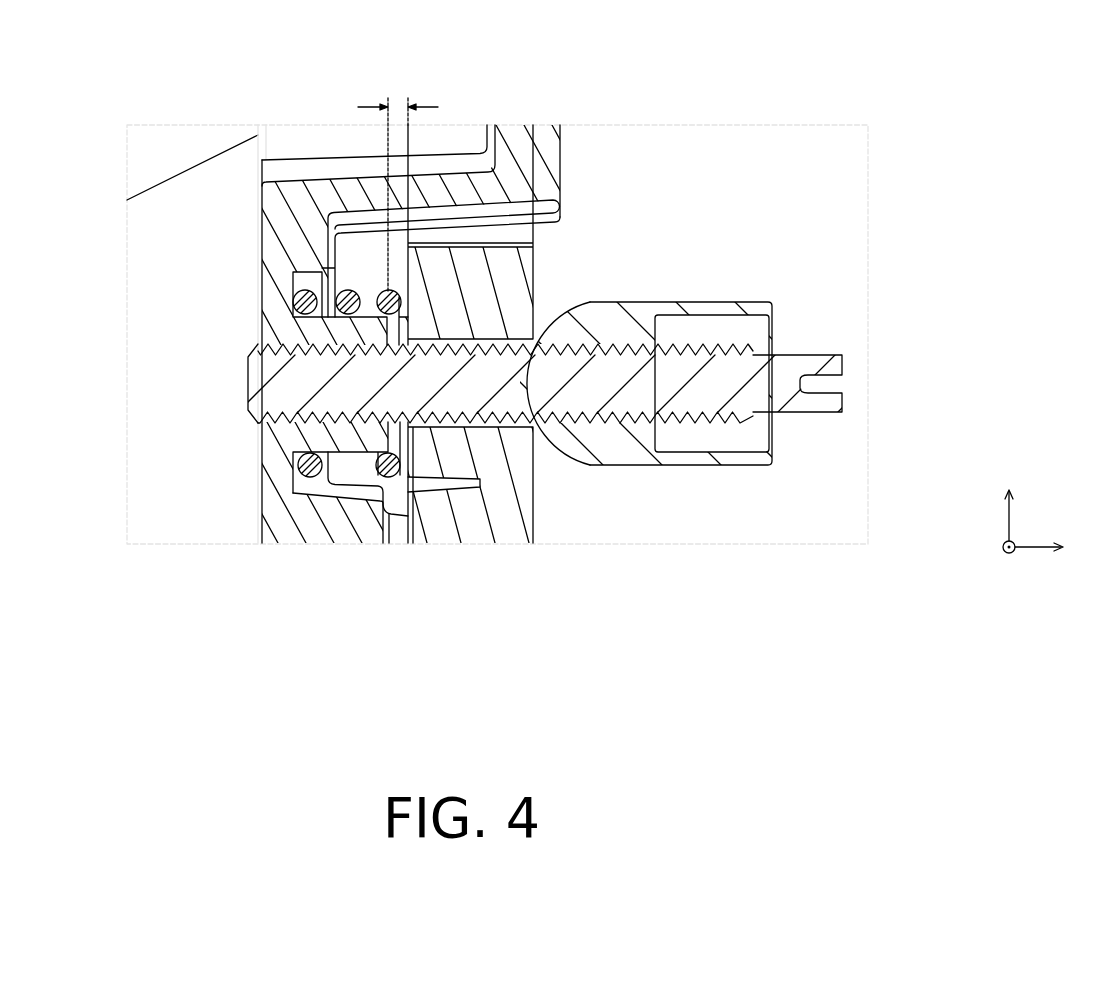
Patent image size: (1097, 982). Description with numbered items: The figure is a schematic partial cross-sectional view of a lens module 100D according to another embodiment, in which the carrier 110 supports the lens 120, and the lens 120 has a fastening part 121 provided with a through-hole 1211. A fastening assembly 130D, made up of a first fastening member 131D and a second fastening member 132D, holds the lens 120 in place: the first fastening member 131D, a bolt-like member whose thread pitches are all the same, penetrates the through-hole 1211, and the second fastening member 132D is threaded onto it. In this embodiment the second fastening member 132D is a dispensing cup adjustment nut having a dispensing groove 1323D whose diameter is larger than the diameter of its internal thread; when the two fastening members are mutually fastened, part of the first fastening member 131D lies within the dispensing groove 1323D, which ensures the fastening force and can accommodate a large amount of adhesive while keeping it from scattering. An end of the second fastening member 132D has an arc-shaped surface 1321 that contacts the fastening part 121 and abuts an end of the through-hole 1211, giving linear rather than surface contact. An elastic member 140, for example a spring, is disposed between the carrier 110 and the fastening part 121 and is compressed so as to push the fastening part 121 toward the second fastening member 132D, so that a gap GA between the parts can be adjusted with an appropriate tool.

The lens module 100D is at (593, 358).
The carrier 110 is at (327, 189).
The lens 120 is at (463, 291).
The fastening part 121 is at (533, 280).
The through-hole 1211 is at (498, 359).
The fastening assembly 130D is at (610, 481).
The first fastening member 131D is at (618, 407).
The second fastening member 132D is at (728, 459).
The arc-shaped surface 1321 is at (557, 305).
The dispensing groove 1323D is at (752, 437).
The elastic member 140 is at (388, 292).
The gap GA is at (395, 104).